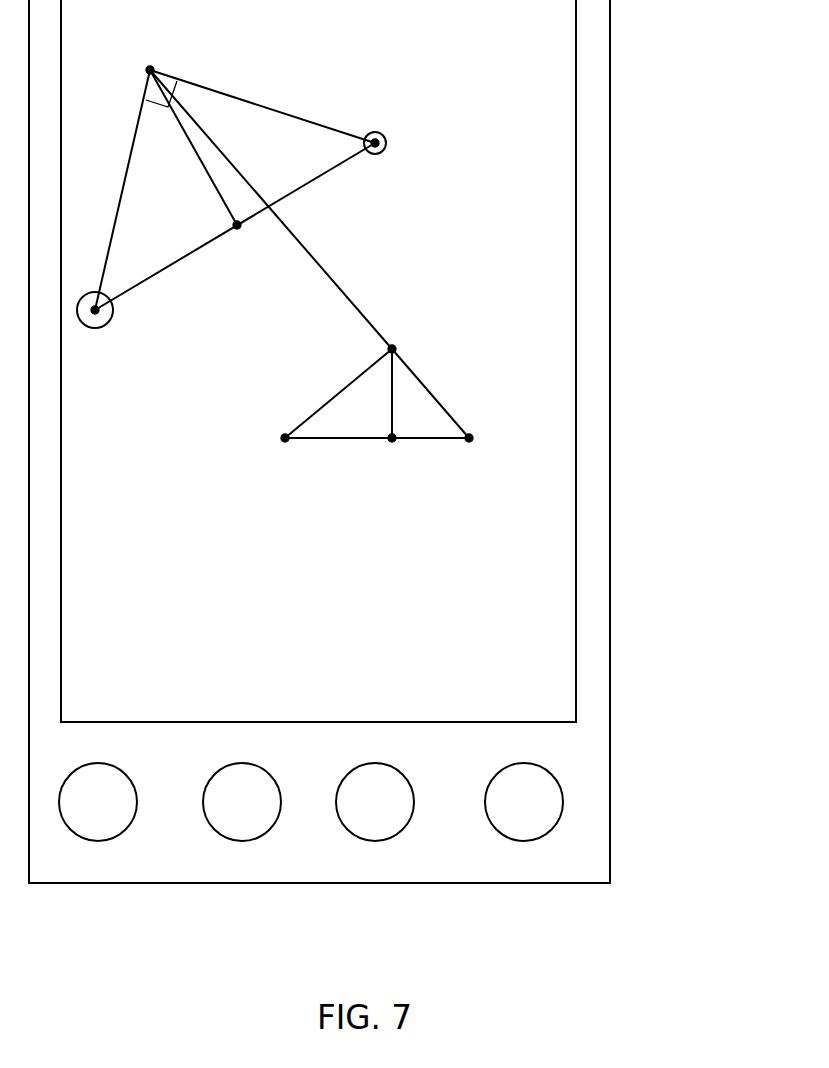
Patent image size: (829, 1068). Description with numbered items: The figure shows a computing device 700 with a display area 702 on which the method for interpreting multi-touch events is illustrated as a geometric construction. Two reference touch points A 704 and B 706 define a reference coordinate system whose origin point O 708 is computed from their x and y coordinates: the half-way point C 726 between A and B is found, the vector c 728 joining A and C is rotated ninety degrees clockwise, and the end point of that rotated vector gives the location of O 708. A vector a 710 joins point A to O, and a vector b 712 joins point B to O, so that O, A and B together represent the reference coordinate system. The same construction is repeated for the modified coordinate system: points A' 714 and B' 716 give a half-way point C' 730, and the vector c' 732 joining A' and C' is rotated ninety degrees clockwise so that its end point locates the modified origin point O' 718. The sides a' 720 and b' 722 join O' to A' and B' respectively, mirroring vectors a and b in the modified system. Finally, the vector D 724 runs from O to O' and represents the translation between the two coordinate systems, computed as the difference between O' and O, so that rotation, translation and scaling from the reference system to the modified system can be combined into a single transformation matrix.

The electronic device 700 is at (610, 13).
The display screen 702 is at (577, 139).
The reference touch point A 704 is at (95, 373).
The reference touch point B 706 is at (420, 142).
The origin point O 708 is at (122, 50).
The vector a 710 is at (137, 122).
The vector b 712 is at (290, 112).
The touch point A' 714 is at (270, 488).
The touch point B' 716 is at (480, 482).
The modified origin point O' 718 is at (425, 300).
The line a' 720 is at (293, 388).
The line b' 722 is at (455, 418).
The vector D 724 is at (335, 280).
The half-way point C 726 is at (248, 265).
The vector c 728 is at (193, 290).
The half-way point C' 730 is at (402, 472).
The vector c' 732 is at (353, 470).